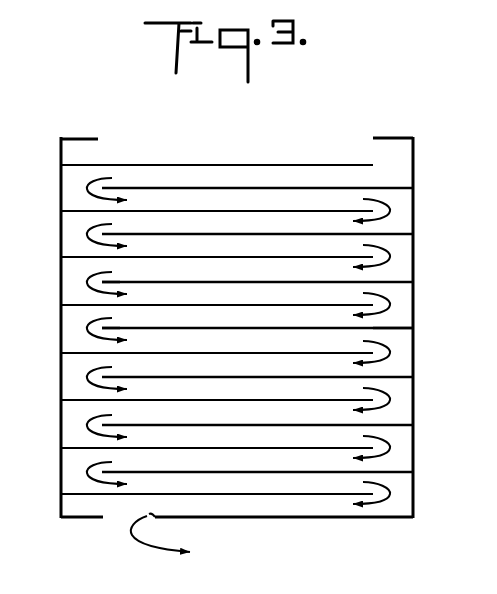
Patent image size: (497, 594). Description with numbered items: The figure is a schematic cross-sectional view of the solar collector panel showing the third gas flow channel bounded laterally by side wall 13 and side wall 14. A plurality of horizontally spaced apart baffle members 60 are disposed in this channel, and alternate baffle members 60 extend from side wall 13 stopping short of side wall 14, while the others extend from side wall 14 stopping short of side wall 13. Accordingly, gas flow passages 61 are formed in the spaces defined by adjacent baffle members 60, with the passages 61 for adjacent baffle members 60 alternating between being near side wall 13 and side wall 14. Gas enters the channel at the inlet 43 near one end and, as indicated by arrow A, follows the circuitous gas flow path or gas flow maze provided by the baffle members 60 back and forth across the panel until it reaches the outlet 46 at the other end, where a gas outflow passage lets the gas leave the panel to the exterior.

The side wall 13 is at (60, 197).
The side wall 14 is at (415, 212).
The third gas flow channel inlet 43 is at (212, 132).
The third gas flow channel outlet 46 is at (110, 527).
The baffle members 60 is at (398, 326).
The gas flow passages 61 is at (80, 285).
The arrow A is at (356, 179).